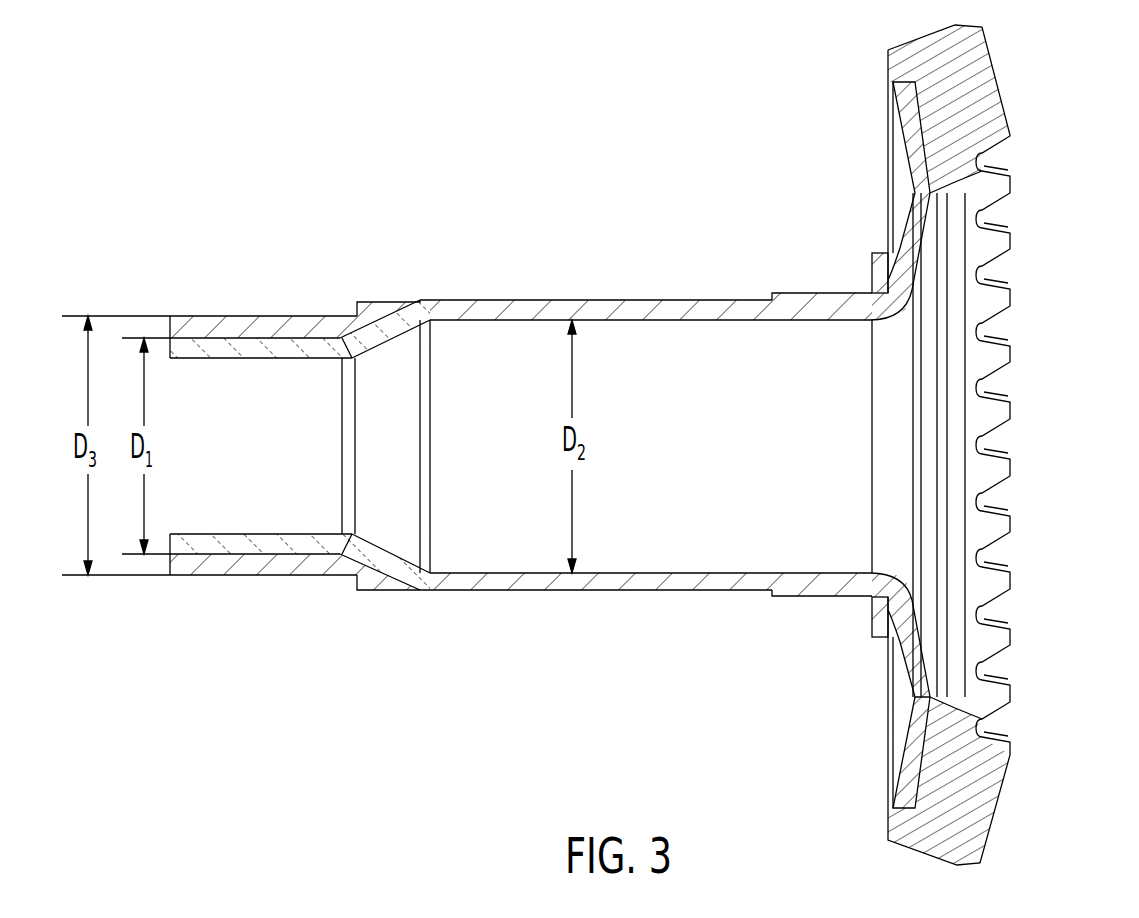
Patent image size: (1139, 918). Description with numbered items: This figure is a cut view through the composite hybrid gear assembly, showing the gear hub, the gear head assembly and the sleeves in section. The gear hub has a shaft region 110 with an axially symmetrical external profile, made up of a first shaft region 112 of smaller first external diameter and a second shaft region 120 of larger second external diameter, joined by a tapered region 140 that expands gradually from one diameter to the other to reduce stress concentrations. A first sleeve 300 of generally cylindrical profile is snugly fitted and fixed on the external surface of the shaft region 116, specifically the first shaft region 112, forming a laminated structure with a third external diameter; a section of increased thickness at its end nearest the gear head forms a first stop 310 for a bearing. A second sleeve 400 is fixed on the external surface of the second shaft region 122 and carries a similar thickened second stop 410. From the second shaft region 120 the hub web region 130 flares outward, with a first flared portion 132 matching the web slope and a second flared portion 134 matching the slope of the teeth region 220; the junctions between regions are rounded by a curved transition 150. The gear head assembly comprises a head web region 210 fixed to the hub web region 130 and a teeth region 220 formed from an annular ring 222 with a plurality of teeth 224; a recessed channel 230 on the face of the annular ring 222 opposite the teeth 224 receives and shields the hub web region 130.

The shaft region 110 is at (617, 700).
The first shaft region 112 is at (309, 345).
The shaft region 116 is at (228, 333).
The second shaft region 120 is at (497, 305).
The second shaft region 122 is at (807, 291).
The hub web region 130 is at (910, 153).
The first flared portion 132 is at (912, 648).
The second flared portion 134 is at (907, 770).
The tapered region 140 is at (397, 318).
The curved transition 150 is at (347, 545).
The head web region 210 is at (938, 678).
The teeth region 220 is at (980, 106).
The annular ring 222 is at (892, 827).
The teeth 224 is at (997, 356).
The recessed channel 230 is at (911, 97).
The first sleeve 300 is at (226, 571).
The first stop 310 is at (380, 578).
The second sleeve 400 is at (790, 598).
The second stop 410 is at (887, 273).